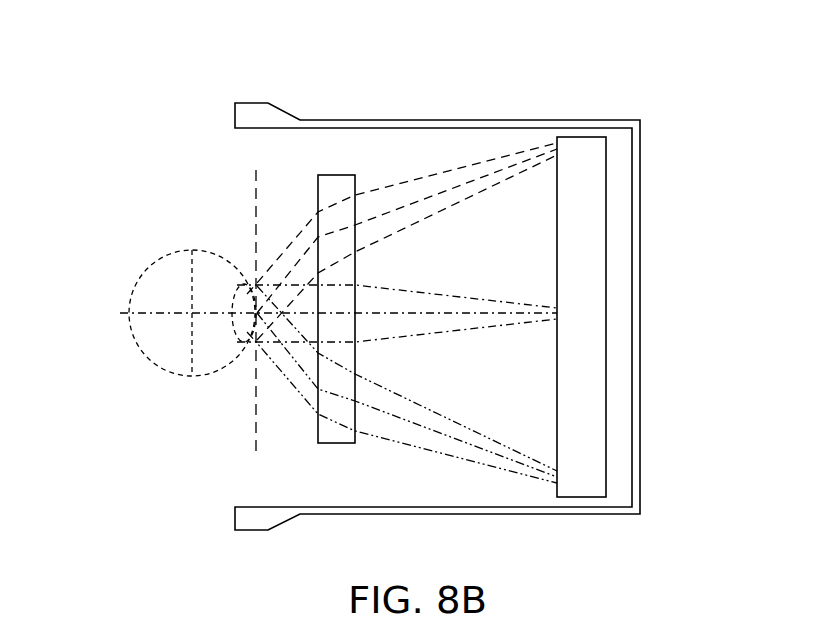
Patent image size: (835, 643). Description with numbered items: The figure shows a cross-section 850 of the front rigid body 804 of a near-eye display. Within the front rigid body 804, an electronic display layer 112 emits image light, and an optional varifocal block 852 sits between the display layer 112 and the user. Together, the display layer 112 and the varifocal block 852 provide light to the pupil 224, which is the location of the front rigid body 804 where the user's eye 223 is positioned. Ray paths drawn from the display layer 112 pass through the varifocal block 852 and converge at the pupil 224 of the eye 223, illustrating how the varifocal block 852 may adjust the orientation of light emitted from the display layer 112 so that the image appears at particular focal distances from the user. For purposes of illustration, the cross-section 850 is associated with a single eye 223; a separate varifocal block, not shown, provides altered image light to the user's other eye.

The cross-section 850 is at (87, 108).
The front rigid body 804 is at (606, 120).
The electronic display layer 112 is at (607, 183).
The varifocal block 852 is at (318, 188).
The eye 223 is at (128, 313).
The pupil 224 is at (253, 413).